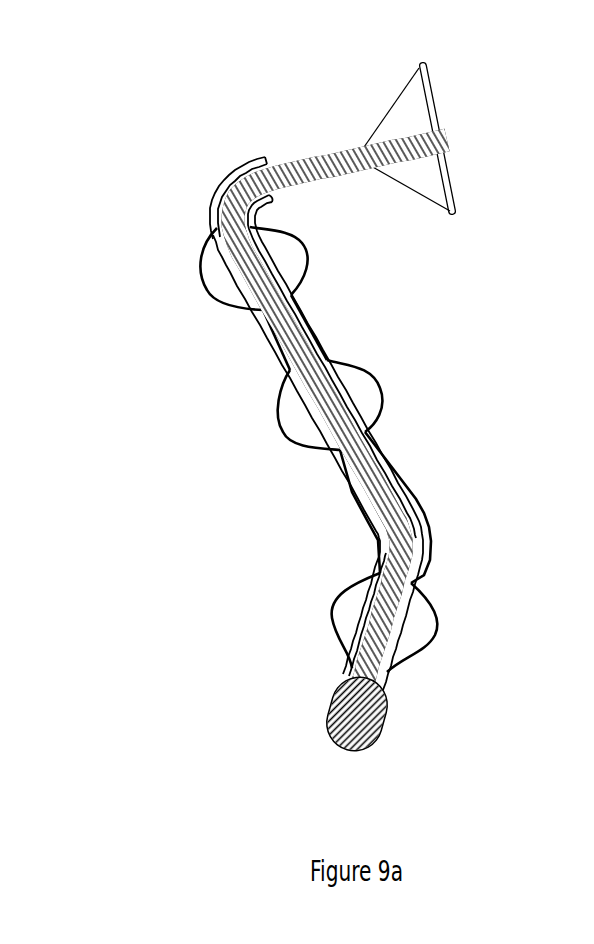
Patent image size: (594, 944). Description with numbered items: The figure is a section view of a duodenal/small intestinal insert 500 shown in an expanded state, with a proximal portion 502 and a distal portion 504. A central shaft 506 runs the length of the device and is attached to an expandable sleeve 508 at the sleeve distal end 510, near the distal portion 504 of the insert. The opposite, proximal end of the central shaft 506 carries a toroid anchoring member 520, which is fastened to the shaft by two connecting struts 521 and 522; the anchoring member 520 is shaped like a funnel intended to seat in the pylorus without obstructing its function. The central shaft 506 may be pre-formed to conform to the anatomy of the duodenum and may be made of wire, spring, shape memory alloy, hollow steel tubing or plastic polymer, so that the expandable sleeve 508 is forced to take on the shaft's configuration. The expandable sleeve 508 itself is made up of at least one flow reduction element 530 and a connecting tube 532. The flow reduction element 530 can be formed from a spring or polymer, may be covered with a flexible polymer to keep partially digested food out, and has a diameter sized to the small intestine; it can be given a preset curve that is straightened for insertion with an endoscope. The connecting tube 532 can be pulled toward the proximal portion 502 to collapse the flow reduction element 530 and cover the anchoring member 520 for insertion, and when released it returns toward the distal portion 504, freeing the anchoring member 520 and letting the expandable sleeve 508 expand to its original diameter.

The duodenal/small intestinal insert 500 is at (435, 372).
The proximal portion 502 is at (298, 150).
The distal portion 504 is at (313, 643).
The central shaft 506 is at (300, 178).
The expandable sleeve 508 is at (272, 353).
The sleeve distal end 510 is at (370, 736).
The toroid anchoring member 520 is at (437, 72).
The connecting strut 521 is at (400, 97).
The connecting strut 522 is at (418, 200).
The flow reduction element 530 is at (285, 430).
The connecting tube 532 is at (222, 183).